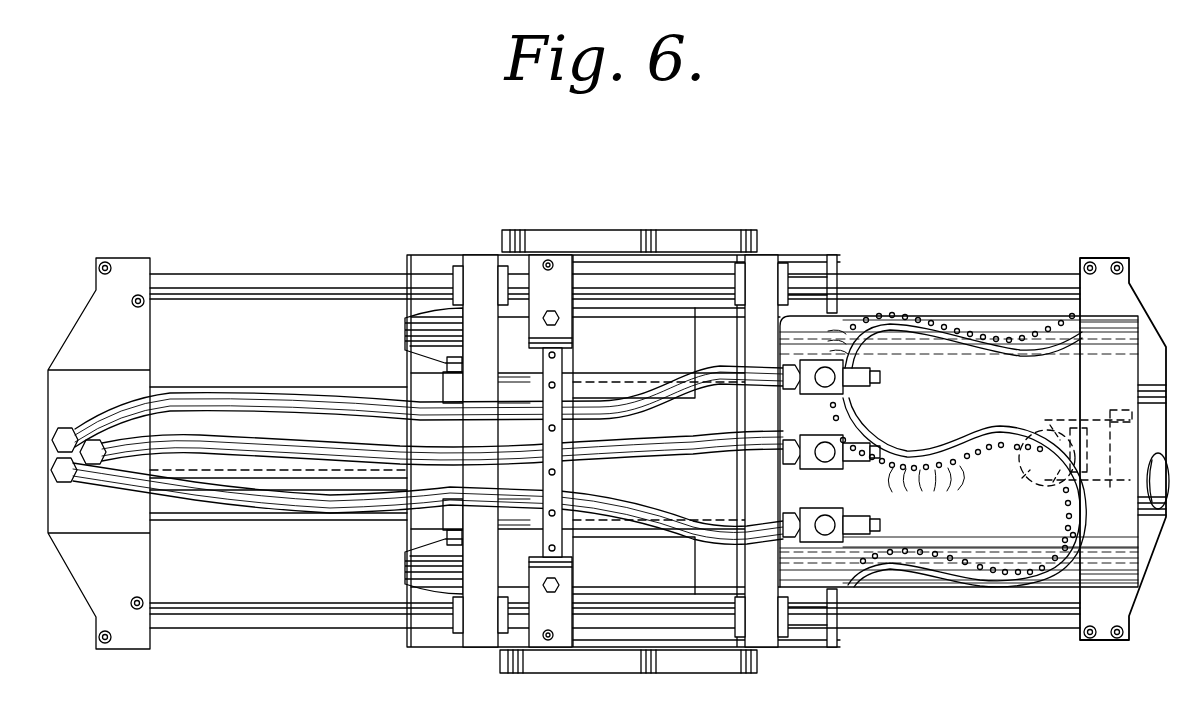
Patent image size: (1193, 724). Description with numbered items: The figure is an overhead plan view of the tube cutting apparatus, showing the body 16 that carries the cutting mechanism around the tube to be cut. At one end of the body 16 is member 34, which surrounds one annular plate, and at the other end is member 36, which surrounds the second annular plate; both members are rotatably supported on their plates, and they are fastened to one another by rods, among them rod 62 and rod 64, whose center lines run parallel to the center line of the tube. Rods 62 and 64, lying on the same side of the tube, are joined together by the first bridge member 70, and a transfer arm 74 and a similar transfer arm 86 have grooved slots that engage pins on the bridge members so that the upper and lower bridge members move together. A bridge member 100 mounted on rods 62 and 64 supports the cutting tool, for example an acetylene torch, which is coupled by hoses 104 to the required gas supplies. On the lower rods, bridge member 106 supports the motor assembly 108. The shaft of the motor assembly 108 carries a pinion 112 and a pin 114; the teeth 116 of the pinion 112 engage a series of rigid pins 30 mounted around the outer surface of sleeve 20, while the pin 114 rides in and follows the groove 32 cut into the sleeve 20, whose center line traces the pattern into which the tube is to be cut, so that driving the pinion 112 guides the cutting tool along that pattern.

The body 16 is at (262, 256).
The sleeve 20 is at (1012, 322).
The rigid pins 30 is at (932, 444).
The groove 32 is at (953, 343).
The member 34 is at (766, 266).
The member 36 is at (478, 265).
The rod 62 is at (276, 620).
The rod 64 is at (298, 274).
The first bridge member 70 is at (575, 345).
The arm 74 is at (600, 676).
The transfer arm 86 is at (603, 237).
The bridge member 100 is at (142, 356).
The hoses 104 is at (257, 400).
The bridge member 106 is at (1143, 573).
The motor assembly 108 is at (1114, 432).
The pinion 112 is at (1053, 482).
The pin 114 is at (1021, 479).
The teeth 116 is at (1053, 418).